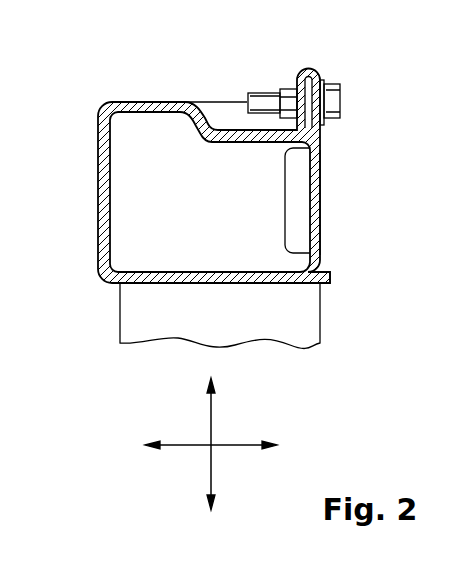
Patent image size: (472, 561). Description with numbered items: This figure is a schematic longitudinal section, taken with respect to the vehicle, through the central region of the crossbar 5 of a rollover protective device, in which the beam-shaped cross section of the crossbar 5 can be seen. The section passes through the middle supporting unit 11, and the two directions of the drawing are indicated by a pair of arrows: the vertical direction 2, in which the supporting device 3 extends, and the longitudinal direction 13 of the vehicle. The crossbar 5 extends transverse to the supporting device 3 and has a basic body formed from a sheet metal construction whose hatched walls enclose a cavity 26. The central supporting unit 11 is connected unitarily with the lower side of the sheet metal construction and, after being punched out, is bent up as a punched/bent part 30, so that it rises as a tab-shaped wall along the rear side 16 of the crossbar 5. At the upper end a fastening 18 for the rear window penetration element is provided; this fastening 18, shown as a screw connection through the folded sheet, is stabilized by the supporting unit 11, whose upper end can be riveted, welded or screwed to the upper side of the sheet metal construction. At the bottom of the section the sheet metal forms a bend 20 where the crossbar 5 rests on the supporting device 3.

The vertical direction 2 is at (211, 420).
The supporting device 3 is at (120, 307).
The crossbar 5 is at (104, 178).
The supporting unit 11 is at (340, 198).
The longitudinal direction 13 is at (243, 443).
The rear side 16 is at (323, 165).
The fastening of the rear window penetration element 18 is at (330, 82).
The bend 20 is at (323, 278).
The cavity 26 is at (137, 222).
The punched/bent part 30 is at (340, 225).